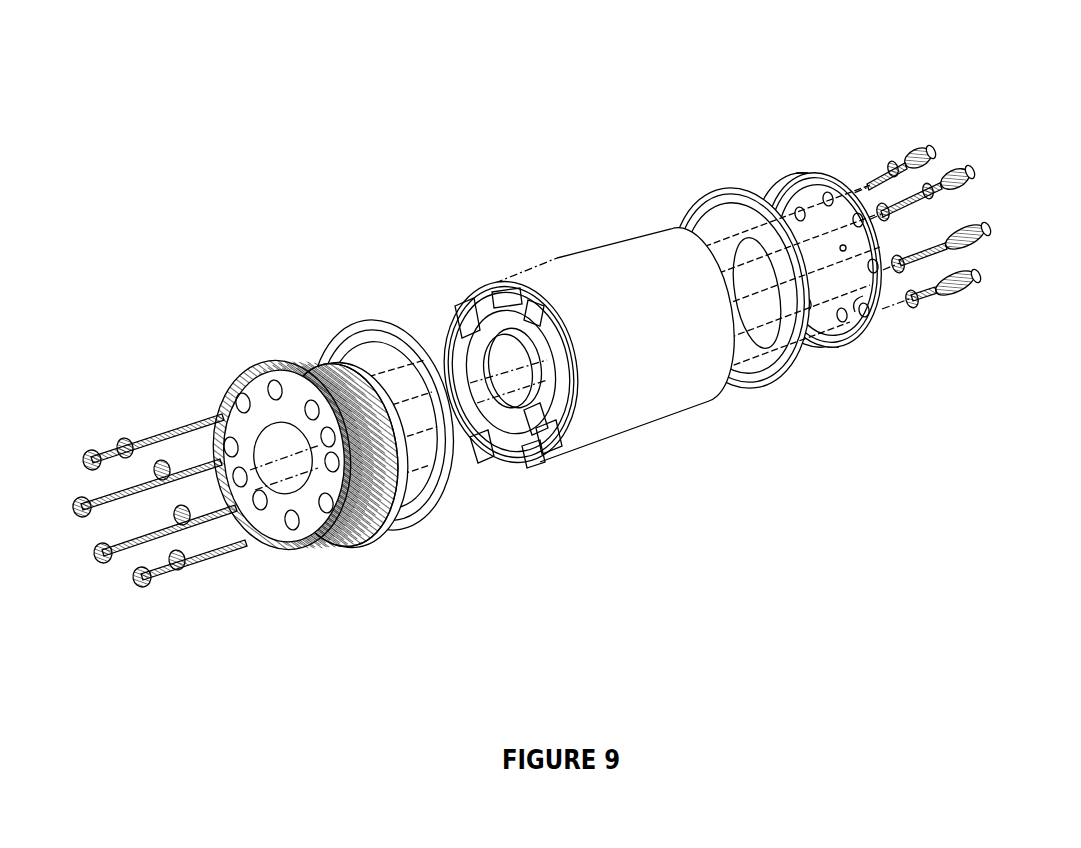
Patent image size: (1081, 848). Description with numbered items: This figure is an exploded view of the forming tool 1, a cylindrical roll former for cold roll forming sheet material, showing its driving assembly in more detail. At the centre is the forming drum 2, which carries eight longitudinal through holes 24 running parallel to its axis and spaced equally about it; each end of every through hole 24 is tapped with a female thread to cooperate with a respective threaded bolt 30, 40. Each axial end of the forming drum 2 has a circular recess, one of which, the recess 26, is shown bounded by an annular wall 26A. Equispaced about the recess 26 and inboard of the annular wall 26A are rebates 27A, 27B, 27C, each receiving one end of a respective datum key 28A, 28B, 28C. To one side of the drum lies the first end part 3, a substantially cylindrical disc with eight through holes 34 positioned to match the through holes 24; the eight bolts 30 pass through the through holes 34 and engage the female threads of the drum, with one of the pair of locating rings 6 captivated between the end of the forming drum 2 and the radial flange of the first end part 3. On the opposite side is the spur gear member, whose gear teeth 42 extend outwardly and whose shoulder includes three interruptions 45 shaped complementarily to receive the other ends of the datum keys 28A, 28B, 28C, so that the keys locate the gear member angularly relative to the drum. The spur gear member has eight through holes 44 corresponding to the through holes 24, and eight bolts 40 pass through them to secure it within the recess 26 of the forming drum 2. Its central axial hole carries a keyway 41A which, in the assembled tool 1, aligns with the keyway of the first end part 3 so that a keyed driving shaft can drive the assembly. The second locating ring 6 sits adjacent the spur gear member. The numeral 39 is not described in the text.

The forming tool 1 is at (960, 499).
The central forming drum 2 is at (614, 345).
The first end part 3 is at (803, 172).
The locating rings 6 is at (724, 190).
The longitudinal through holes 24 is at (540, 425).
The end recess 26 is at (548, 398).
The annular wall 26A is at (537, 460).
The rebate 27A is at (556, 437).
The rebate 27B is at (538, 300).
The rebate 27C is at (457, 325).
The datum key 28A is at (487, 470).
The datum key 28B is at (468, 298).
The datum key 28C is at (437, 345).
The bolts 30 is at (955, 168).
The through holes 34 is at (843, 322).
The alignment pin 39 is at (851, 296).
The bolts 40 is at (205, 553).
The keyway 41A is at (262, 383).
The gear teeth 42 is at (273, 422).
The through holes 44 is at (237, 383).
The interruptions 45 is at (340, 350).